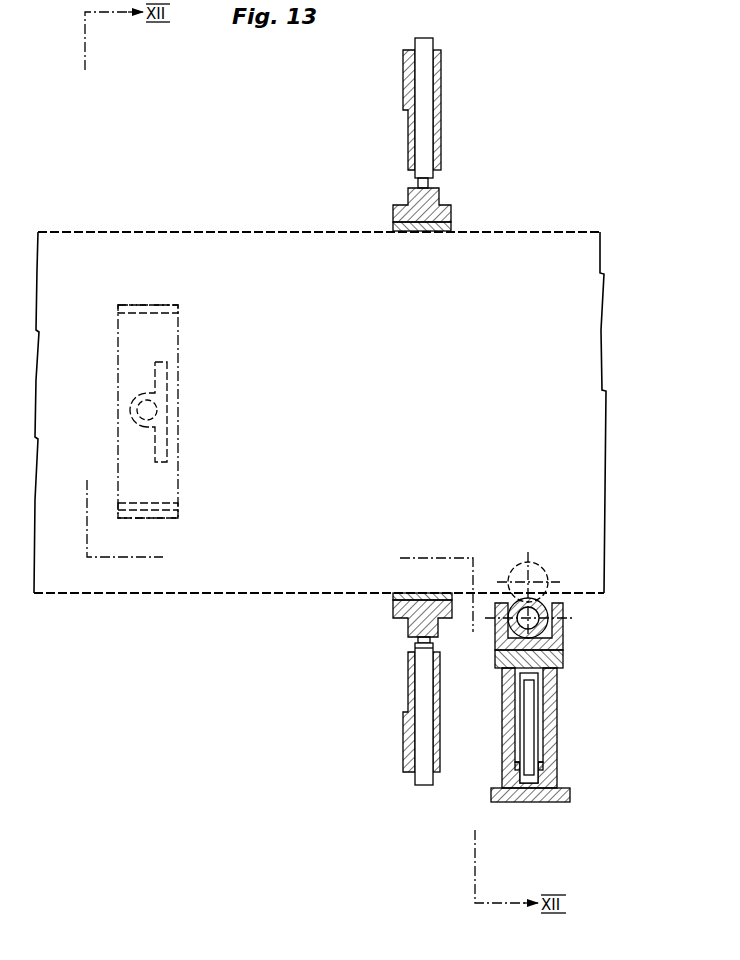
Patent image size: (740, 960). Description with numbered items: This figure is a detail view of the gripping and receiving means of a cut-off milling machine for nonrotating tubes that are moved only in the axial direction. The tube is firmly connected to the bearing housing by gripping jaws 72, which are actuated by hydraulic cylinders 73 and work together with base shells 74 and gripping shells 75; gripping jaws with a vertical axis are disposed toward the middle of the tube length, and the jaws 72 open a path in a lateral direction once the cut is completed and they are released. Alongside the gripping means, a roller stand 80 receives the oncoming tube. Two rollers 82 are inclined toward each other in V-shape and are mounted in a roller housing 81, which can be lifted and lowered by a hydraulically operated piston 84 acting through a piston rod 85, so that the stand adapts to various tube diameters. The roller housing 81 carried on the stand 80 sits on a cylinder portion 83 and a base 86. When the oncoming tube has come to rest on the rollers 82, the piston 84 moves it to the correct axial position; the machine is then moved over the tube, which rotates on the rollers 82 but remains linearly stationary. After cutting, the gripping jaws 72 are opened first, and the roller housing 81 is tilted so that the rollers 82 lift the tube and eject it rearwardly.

The gripping jaws 72 is at (441, 85).
The hydraulic cylinders 73 is at (425, 44).
The base shells 74 is at (451, 212).
The gripping shells 75 is at (440, 228).
The roller stand 80 is at (567, 681).
The roller housing 81 is at (563, 630).
The rollers 82 is at (546, 583).
The cylinder 83 is at (553, 715).
The hydraulically operated piston 84 is at (530, 668).
The piston rod 85 is at (527, 744).
The base flange 86 is at (570, 799).